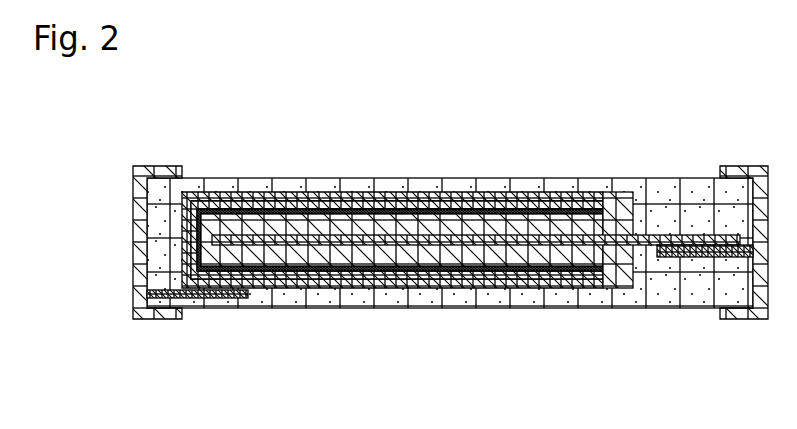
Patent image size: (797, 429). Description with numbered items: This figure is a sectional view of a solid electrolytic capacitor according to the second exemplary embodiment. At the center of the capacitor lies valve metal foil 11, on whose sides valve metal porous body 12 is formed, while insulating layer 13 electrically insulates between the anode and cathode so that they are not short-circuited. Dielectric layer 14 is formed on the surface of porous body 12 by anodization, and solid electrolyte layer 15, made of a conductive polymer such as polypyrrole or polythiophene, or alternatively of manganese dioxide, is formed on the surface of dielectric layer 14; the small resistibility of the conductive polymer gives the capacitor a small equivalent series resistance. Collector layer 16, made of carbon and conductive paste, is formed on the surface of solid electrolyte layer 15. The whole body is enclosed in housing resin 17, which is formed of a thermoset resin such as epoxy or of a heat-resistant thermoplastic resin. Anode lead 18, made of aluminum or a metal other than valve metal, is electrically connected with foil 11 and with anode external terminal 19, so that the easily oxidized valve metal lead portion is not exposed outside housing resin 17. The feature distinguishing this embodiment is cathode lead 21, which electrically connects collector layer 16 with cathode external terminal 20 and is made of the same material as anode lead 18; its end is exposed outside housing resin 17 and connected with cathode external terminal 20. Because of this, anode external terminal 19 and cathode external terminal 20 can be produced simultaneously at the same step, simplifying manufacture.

The valve metal foil 11 is at (238, 238).
The valve metal porous body 12 is at (330, 217).
The insulating layer 13 is at (620, 283).
The dielectric layer 14 is at (405, 211).
The solid electrolyte layer 15 is at (470, 205).
The collector layer 16 is at (526, 197).
The housing resin 17 is at (330, 302).
The anode lead 18 is at (693, 253).
The anode external terminal 19 is at (748, 313).
The cathode external terminal 20 is at (145, 315).
The cathode lead 21 is at (225, 295).